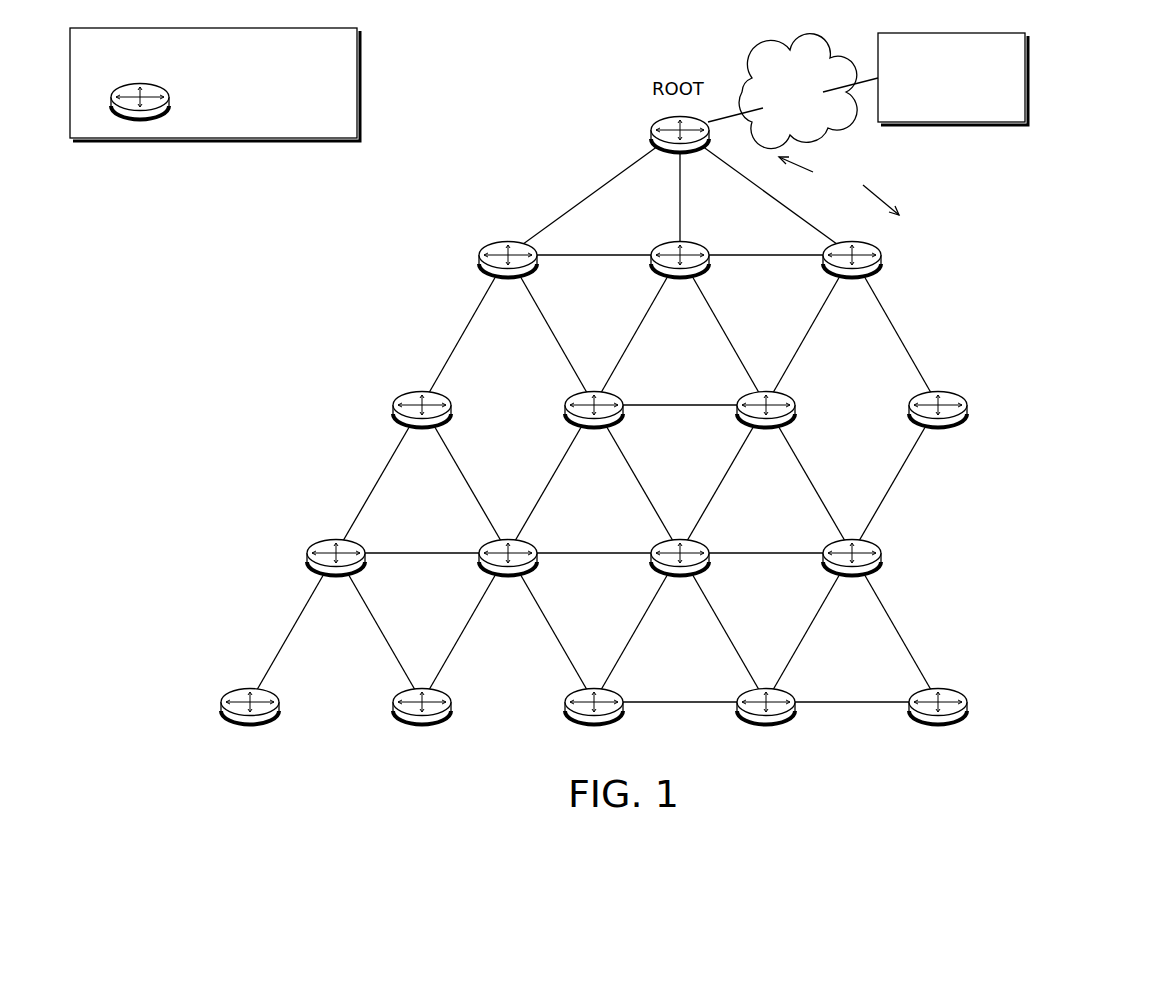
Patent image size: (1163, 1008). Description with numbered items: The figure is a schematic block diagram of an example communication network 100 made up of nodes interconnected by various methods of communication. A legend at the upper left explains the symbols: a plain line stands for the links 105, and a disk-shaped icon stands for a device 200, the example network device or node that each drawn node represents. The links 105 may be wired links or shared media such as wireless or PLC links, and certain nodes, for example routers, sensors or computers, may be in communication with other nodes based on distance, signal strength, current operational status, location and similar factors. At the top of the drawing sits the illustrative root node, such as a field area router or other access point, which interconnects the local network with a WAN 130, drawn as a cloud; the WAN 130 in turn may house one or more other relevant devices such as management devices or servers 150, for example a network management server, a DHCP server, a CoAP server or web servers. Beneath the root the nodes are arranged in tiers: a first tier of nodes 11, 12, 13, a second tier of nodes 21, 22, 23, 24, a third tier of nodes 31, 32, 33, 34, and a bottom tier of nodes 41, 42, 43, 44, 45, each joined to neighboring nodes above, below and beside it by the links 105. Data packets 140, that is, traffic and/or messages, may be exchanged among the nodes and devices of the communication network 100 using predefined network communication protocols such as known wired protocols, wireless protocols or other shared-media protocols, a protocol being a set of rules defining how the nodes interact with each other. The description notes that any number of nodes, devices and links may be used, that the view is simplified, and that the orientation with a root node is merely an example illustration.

The communication network 100 is at (1078, 82).
The links 105 is at (102, 55).
The WAN 130 is at (779, 116).
The data packets 140 is at (824, 195).
The servers 150 is at (936, 100).
The device 200 is at (213, 102).
The node 11 is at (508, 278).
The node 12 is at (680, 278).
The node 13 is at (852, 278).
The node 21 is at (422, 427).
The node 22 is at (594, 427).
The node 23 is at (766, 427).
The node 24 is at (938, 427).
The node 31 is at (336, 576).
The node 32 is at (508, 576).
The node 33 is at (680, 576).
The node 34 is at (852, 576).
The node 41 is at (250, 724).
The node 42 is at (422, 724).
The node 43 is at (594, 724).
The node 44 is at (766, 724).
The node 45 is at (938, 724).